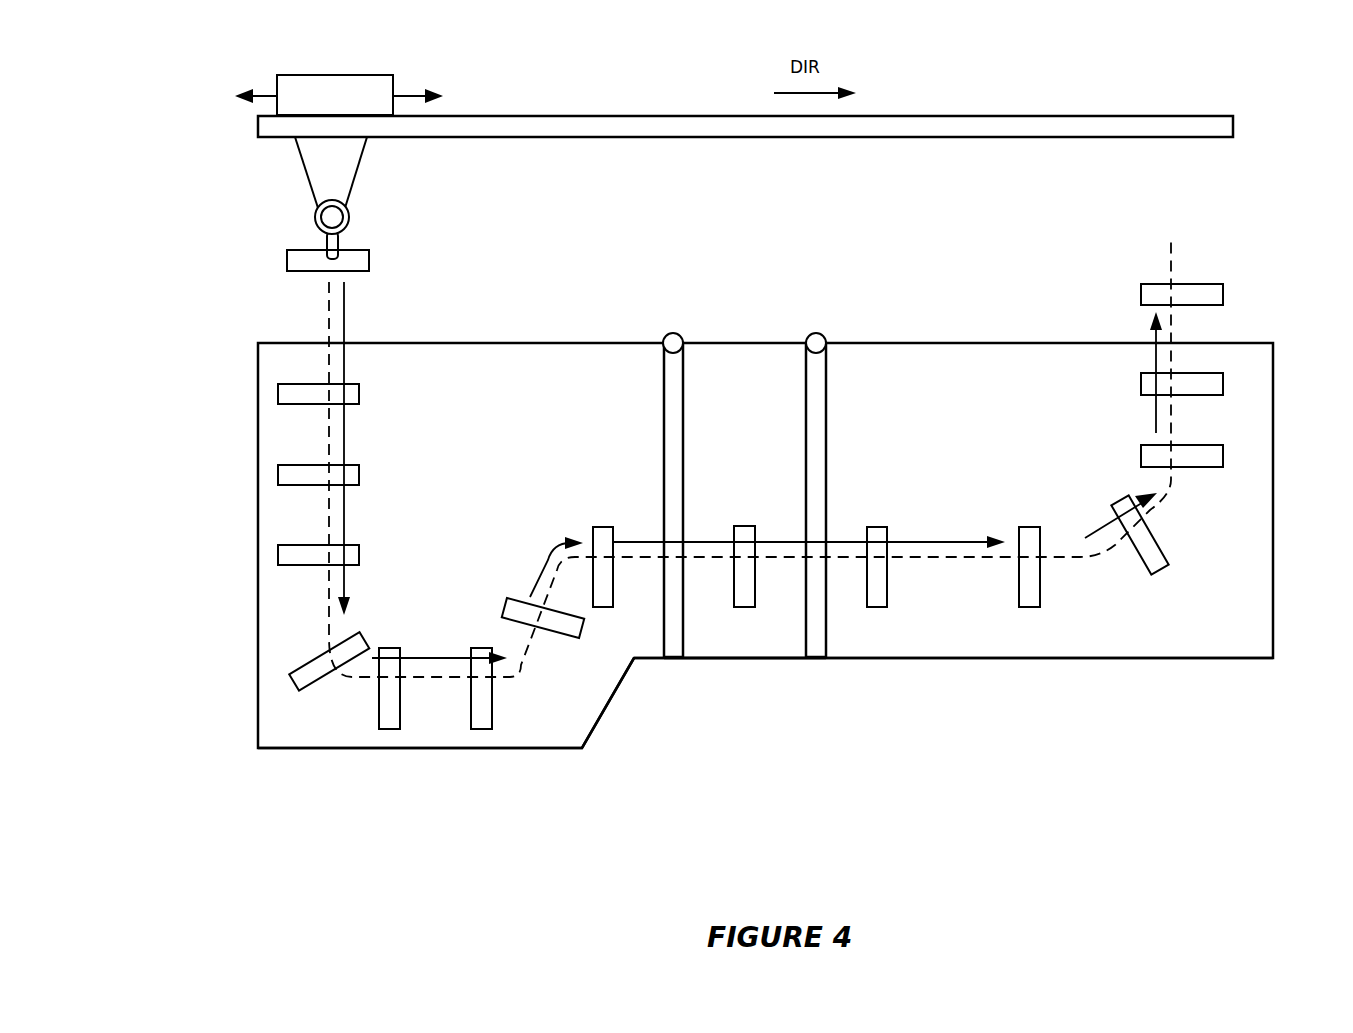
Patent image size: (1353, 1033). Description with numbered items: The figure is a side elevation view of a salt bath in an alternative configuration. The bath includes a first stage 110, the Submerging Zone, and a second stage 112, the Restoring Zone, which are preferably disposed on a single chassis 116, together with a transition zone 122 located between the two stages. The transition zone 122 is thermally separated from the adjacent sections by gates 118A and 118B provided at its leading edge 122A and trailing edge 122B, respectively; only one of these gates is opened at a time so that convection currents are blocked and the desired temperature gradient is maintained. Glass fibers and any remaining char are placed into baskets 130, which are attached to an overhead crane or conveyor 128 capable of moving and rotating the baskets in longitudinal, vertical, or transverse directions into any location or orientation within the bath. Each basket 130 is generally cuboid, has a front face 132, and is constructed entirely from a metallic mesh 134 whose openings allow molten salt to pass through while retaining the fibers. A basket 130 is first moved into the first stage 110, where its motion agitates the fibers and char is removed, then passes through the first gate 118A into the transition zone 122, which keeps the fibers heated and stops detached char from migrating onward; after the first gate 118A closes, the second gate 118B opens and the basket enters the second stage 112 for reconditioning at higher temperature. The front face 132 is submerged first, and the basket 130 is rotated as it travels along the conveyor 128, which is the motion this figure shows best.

The first stage 110 is at (495, 750).
The second stage 112 is at (1098, 660).
The chassis 116 is at (913, 660).
The first gate 118A is at (662, 383).
The second gate 118B is at (805, 373).
The transition zone 122 is at (745, 661).
The leading edge 122A is at (686, 661).
The trailing edge 122B is at (808, 661).
The conveyor 128 is at (347, 75).
The basket 130 is at (353, 250).
The front face 132 is at (278, 412).
The mesh 134 is at (345, 420).